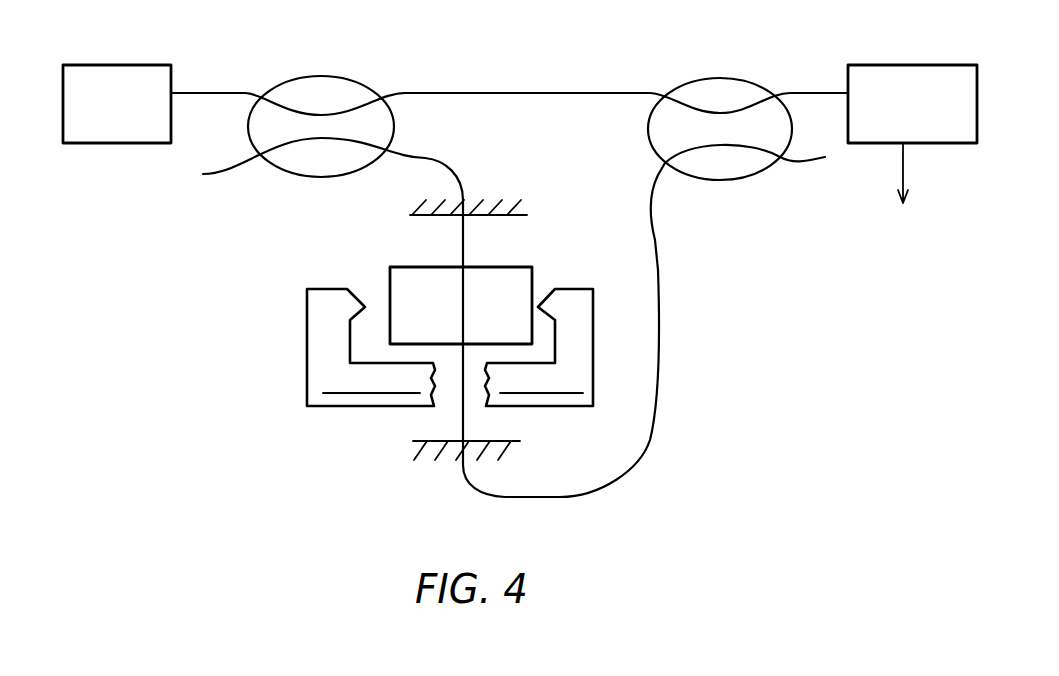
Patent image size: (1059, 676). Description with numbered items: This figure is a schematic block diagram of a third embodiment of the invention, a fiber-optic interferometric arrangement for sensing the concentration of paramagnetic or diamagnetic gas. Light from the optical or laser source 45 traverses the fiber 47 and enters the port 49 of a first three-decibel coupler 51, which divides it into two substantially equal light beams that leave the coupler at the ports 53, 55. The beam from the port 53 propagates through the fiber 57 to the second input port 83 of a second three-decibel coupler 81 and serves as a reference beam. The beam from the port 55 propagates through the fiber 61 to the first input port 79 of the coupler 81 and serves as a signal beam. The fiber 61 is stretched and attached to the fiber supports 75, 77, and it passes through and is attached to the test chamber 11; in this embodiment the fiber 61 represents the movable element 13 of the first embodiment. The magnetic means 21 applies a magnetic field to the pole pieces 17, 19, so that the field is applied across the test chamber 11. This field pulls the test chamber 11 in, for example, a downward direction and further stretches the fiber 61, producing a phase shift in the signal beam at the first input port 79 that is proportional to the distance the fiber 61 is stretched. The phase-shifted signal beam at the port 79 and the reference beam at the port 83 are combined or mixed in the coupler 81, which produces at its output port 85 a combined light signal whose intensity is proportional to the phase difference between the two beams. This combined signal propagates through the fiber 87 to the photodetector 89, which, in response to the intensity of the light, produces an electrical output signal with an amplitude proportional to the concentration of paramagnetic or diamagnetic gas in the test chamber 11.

The test chamber 11 is at (480, 267).
The movable element 13 is at (462, 252).
The pole piece 17 is at (327, 289).
The pole piece 19 is at (575, 289).
The magnetic means 21 is at (456, 323).
The optical source 45 is at (147, 65).
The fiber 47 is at (227, 93).
The port 49 is at (265, 93).
The 3 dB coupler 51 is at (322, 96).
The port 53 is at (382, 93).
The port 55 is at (385, 155).
The fiber 57 is at (512, 93).
The fiber 61 is at (440, 160).
The fiber support 75 is at (504, 215).
The fiber support 77 is at (510, 441).
The first input port 79 is at (666, 165).
The 3 dB coupler 81 is at (738, 97).
The second input port 83 is at (665, 93).
The output port 85 is at (783, 93).
The fiber 87 is at (820, 93).
The photodetector 89 is at (889, 65).